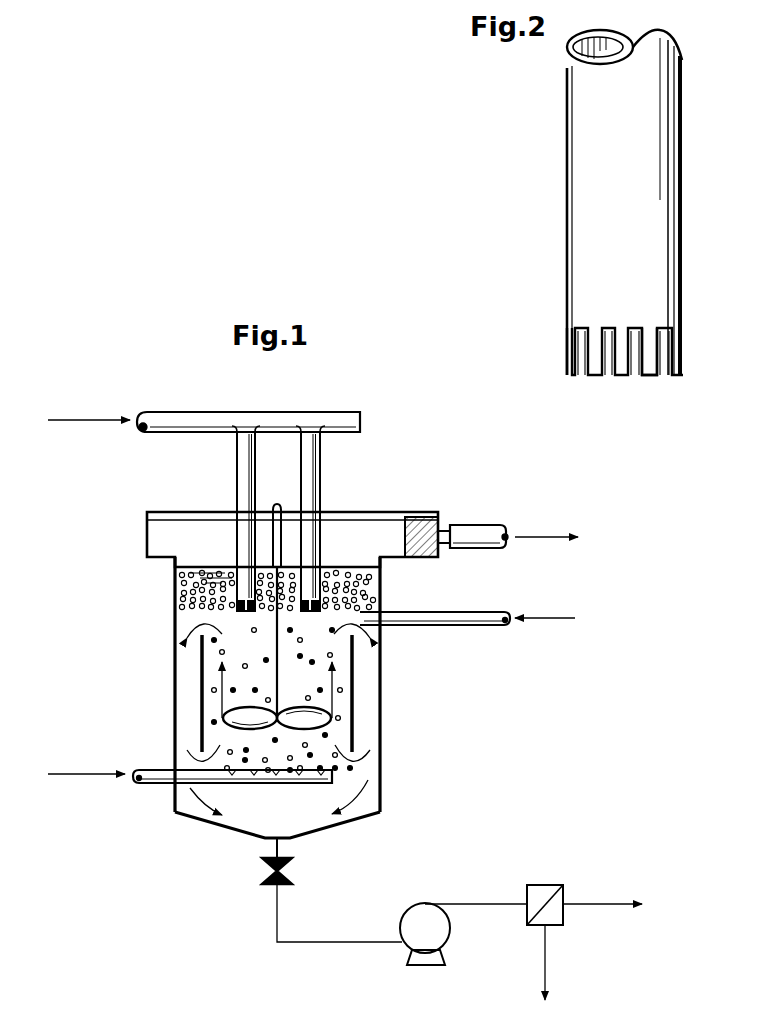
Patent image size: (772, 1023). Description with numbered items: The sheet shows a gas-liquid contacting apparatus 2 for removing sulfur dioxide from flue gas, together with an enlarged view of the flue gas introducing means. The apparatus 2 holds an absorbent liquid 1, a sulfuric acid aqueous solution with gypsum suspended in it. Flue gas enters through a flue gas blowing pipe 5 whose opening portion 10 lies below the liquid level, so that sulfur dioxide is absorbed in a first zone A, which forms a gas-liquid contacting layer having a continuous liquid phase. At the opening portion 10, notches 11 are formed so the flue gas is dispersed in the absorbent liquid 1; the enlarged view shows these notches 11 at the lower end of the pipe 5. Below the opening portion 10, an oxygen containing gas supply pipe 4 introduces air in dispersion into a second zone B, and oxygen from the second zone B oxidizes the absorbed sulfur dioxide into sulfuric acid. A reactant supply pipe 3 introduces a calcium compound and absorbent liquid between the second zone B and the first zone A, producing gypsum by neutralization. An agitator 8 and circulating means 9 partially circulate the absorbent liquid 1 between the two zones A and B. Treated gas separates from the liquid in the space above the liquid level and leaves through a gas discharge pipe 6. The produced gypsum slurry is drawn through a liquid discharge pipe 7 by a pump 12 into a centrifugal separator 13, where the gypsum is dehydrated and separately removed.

In FIG. 1, the absorbent liquid 1 is at (257, 683).
In FIG. 1, the gas-liquid contacting apparatus 2 is at (175, 648).
In FIG. 1, the reactant supply pipe 3 is at (471, 627).
In FIG. 1, the oxygen containing gas supply pipe 4 is at (155, 785).
In FIG. 1, the flue gas blowing pipe 5 is at (199, 410).
In FIG. 2, the flue gas blowing pipe 5 is at (683, 74).
In FIG. 1, the gas discharge pipe 6 is at (478, 525).
In FIG. 1, the liquid discharge pipe 7 is at (274, 848).
In FIG. 1, the agitator 8 is at (281, 541).
In FIG. 1, the circulating means 9 is at (353, 707).
In FIG. 1, the opening portion 10 is at (238, 592).
In FIG. 2, the opening portion 10 is at (622, 320).
In FIG. 2, the notches 11 is at (634, 356).
In FIG. 1, the pump 12 is at (410, 905).
In FIG. 1, the centrifugal separator 13 is at (545, 885).
In FIG. 1, the first zone A is at (190, 588).
In FIG. 1, the second zone B is at (230, 683).